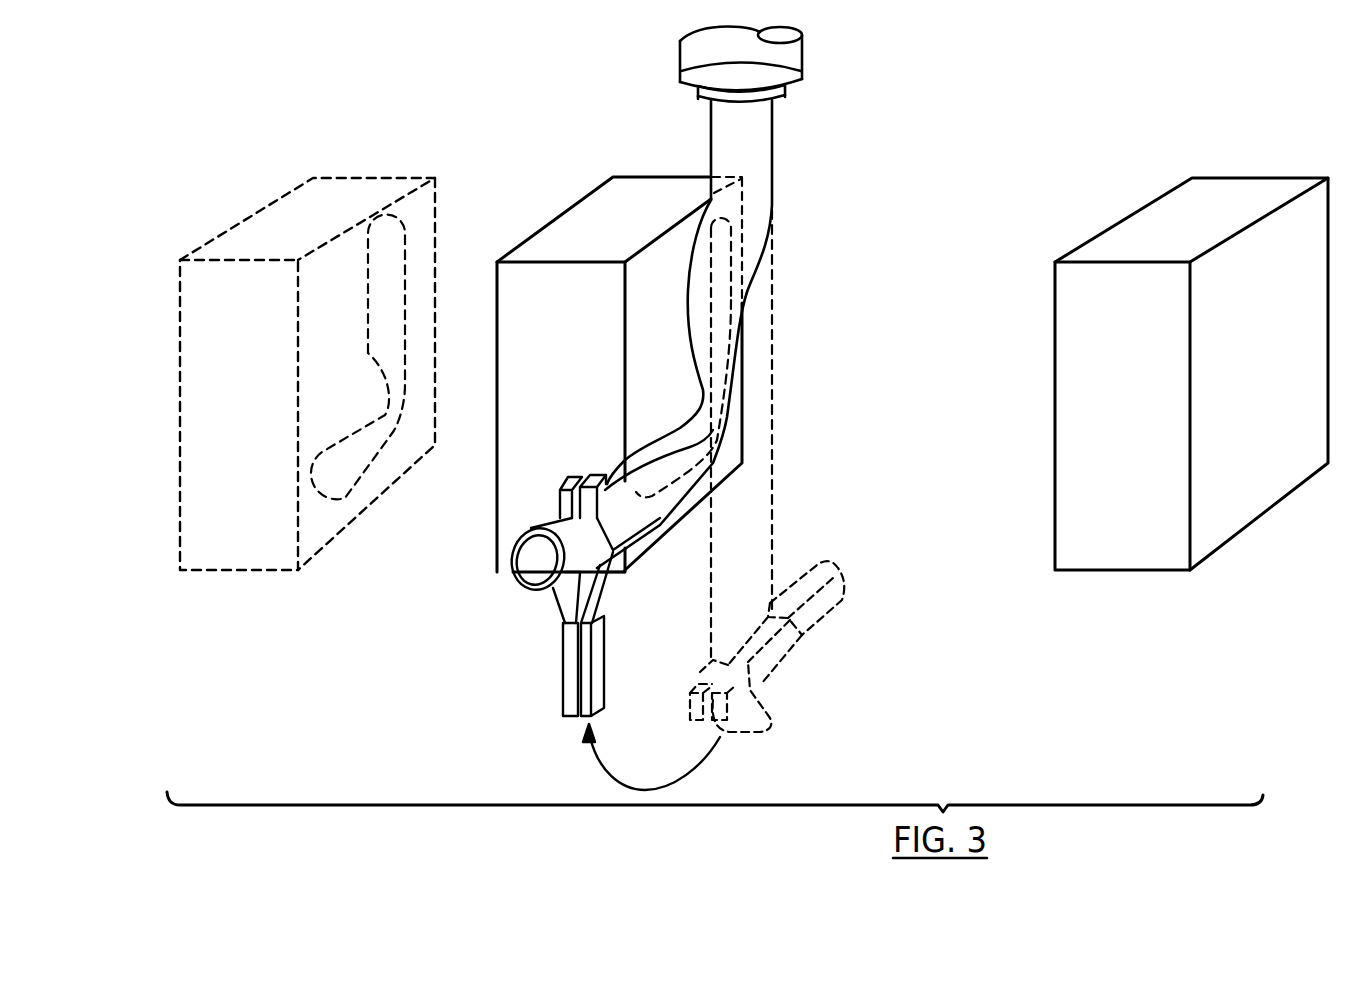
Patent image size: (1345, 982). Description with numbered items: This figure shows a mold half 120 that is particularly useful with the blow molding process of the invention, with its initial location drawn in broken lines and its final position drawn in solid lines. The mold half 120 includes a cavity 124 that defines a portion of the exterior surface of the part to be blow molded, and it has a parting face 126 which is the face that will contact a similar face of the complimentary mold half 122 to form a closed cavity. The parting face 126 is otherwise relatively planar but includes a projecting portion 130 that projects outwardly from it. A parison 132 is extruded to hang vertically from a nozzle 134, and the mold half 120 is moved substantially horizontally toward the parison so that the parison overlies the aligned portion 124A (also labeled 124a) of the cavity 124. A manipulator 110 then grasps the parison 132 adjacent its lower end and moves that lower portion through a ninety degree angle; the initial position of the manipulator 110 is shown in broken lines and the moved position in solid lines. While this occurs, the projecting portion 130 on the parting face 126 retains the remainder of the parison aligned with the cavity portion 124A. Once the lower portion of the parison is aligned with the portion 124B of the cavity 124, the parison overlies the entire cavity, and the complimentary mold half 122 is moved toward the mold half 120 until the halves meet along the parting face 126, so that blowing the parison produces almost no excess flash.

The manipulator 110 is at (563, 657).
The mold half 120 is at (461, 344).
The complimentary mold half 122 is at (1240, 177).
The cavity 124 is at (581, 392).
The aligned portion of the mold cavity 124a is at (393, 252).
The aligned portion of the mold cavity 124A is at (700, 298).
The lower portion of cavity 124B is at (337, 480).
The parting face 126 is at (322, 270).
The projecting portion 130 is at (380, 418).
The parison 132 is at (772, 440).
The nozzle 134 is at (803, 60).